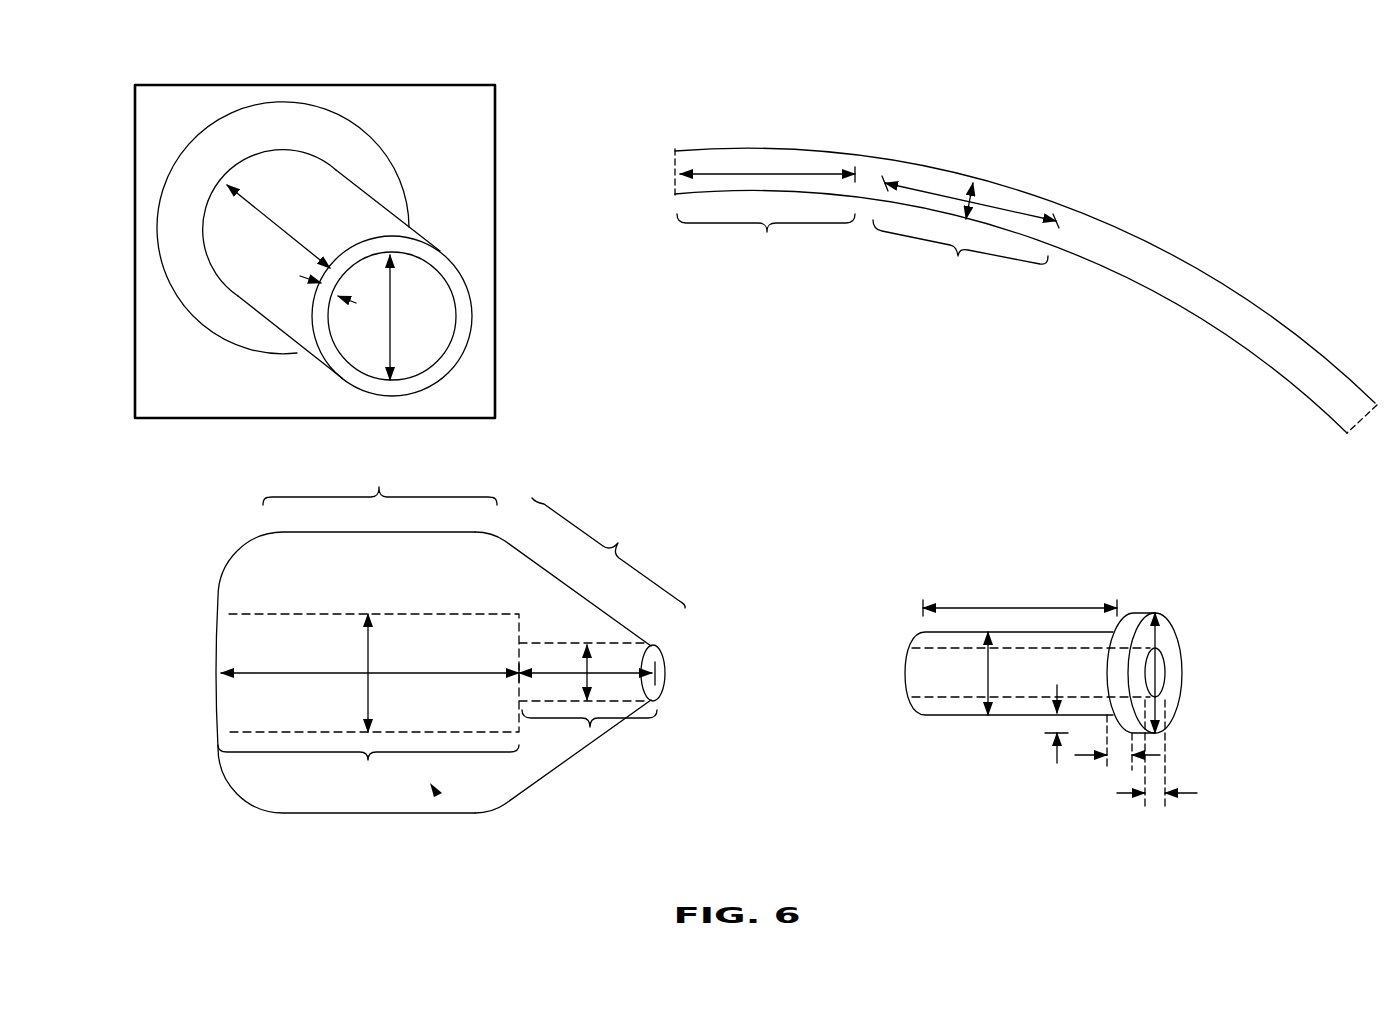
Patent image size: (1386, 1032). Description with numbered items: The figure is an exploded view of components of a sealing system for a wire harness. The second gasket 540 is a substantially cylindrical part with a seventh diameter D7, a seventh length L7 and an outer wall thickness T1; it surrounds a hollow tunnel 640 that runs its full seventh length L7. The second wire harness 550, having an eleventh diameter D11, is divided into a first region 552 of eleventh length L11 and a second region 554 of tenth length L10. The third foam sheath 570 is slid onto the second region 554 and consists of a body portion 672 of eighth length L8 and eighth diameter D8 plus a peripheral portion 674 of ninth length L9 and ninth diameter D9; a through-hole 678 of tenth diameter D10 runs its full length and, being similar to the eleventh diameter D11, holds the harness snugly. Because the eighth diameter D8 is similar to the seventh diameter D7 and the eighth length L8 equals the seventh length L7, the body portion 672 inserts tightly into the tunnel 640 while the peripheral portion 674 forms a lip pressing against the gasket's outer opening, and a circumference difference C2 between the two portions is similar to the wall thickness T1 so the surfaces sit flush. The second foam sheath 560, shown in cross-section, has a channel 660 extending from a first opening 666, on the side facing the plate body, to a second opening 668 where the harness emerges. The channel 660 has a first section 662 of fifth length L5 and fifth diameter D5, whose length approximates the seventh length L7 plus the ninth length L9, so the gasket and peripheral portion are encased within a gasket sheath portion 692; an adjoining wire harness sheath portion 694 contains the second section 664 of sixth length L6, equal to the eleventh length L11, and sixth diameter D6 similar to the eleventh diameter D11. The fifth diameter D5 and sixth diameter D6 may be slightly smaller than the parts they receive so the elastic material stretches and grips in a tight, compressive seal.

The second gasket 540 is at (372, 203).
The hollow tunnel 640 is at (415, 324).
The seventh length L7 is at (281, 223).
The seventh diameter D7 is at (393, 295).
The thickness T1 is at (326, 296).
The second wire harness 550 is at (1123, 228).
The tenth length L10 is at (767, 174).
The eleventh length L11 is at (934, 192).
The eleventh diameter D11 is at (970, 184).
The second region 554 is at (766, 239).
The first region 552 is at (960, 255).
The first opening 666 is at (434, 674).
The channel 660 is at (366, 815).
The second foam sheath 560 is at (297, 642).
The second opening 668 is at (667, 673).
The fifth length L5 is at (436, 670).
The sixth length L6 is at (563, 672).
The fifth diameter D5 is at (373, 685).
The sixth diameter D6 is at (585, 662).
The gasket sheath portion 692 is at (380, 480).
The first section 662 is at (368, 769).
The second section 664 is at (592, 728).
The wire harness sheath portion 694 is at (608, 553).
The through-hole 678 is at (1021, 685).
The body portion 672 is at (973, 584).
The peripheral portion 674 is at (1158, 599).
The third foam sheath 570 is at (1094, 589).
The eighth length L8 is at (1013, 608).
The eighth diameter D8 is at (990, 683).
The ninth diameter D9 is at (1160, 643).
The flange offset C2 is at (1050, 722).
The ninth length L9 is at (1117, 757).
The tenth diameter D10 is at (1157, 797).